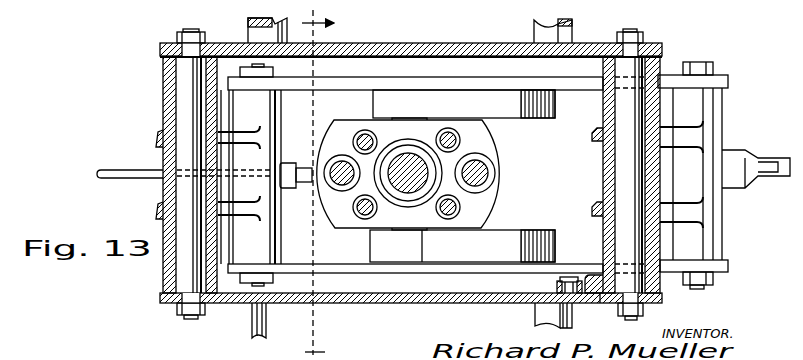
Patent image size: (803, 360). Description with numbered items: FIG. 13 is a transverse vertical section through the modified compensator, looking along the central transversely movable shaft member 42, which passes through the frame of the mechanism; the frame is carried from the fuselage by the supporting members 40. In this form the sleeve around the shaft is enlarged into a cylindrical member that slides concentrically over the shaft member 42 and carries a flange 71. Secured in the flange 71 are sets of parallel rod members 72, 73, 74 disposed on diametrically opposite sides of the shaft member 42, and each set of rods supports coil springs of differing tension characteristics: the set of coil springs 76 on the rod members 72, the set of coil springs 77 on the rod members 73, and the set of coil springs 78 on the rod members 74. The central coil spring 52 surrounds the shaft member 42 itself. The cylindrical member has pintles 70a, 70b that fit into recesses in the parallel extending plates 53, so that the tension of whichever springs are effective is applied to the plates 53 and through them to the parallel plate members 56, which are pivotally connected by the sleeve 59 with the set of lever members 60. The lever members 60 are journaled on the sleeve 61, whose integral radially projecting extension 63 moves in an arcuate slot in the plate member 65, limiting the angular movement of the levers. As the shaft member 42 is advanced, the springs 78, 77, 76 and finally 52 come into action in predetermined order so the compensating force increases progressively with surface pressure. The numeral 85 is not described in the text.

The supporting member 40 is at (250, 25).
The shaft member 42 is at (516, 150).
The coil spring 52 is at (416, 193).
The parallel extending plate 53 is at (462, 176).
The parallel plate member 56 is at (682, 82).
The sleeve 59 is at (705, 105).
The lever member 60 is at (594, 142).
The sleeve 61 is at (602, 229).
The radially projecting extension 63 is at (600, 303).
The plate member 65 is at (556, 287).
The pintle 70a is at (406, 118).
The pintle 70b is at (402, 226).
The flange 71 is at (345, 212).
The rod member 72 is at (372, 331).
The rod member 73 is at (370, 128).
The rod member 74 is at (324, 185).
The coil spring 76 is at (461, 142).
The coil spring 77 is at (360, 138).
The coil spring 78 is at (334, 170).
The lever 85 is at (444, 5).